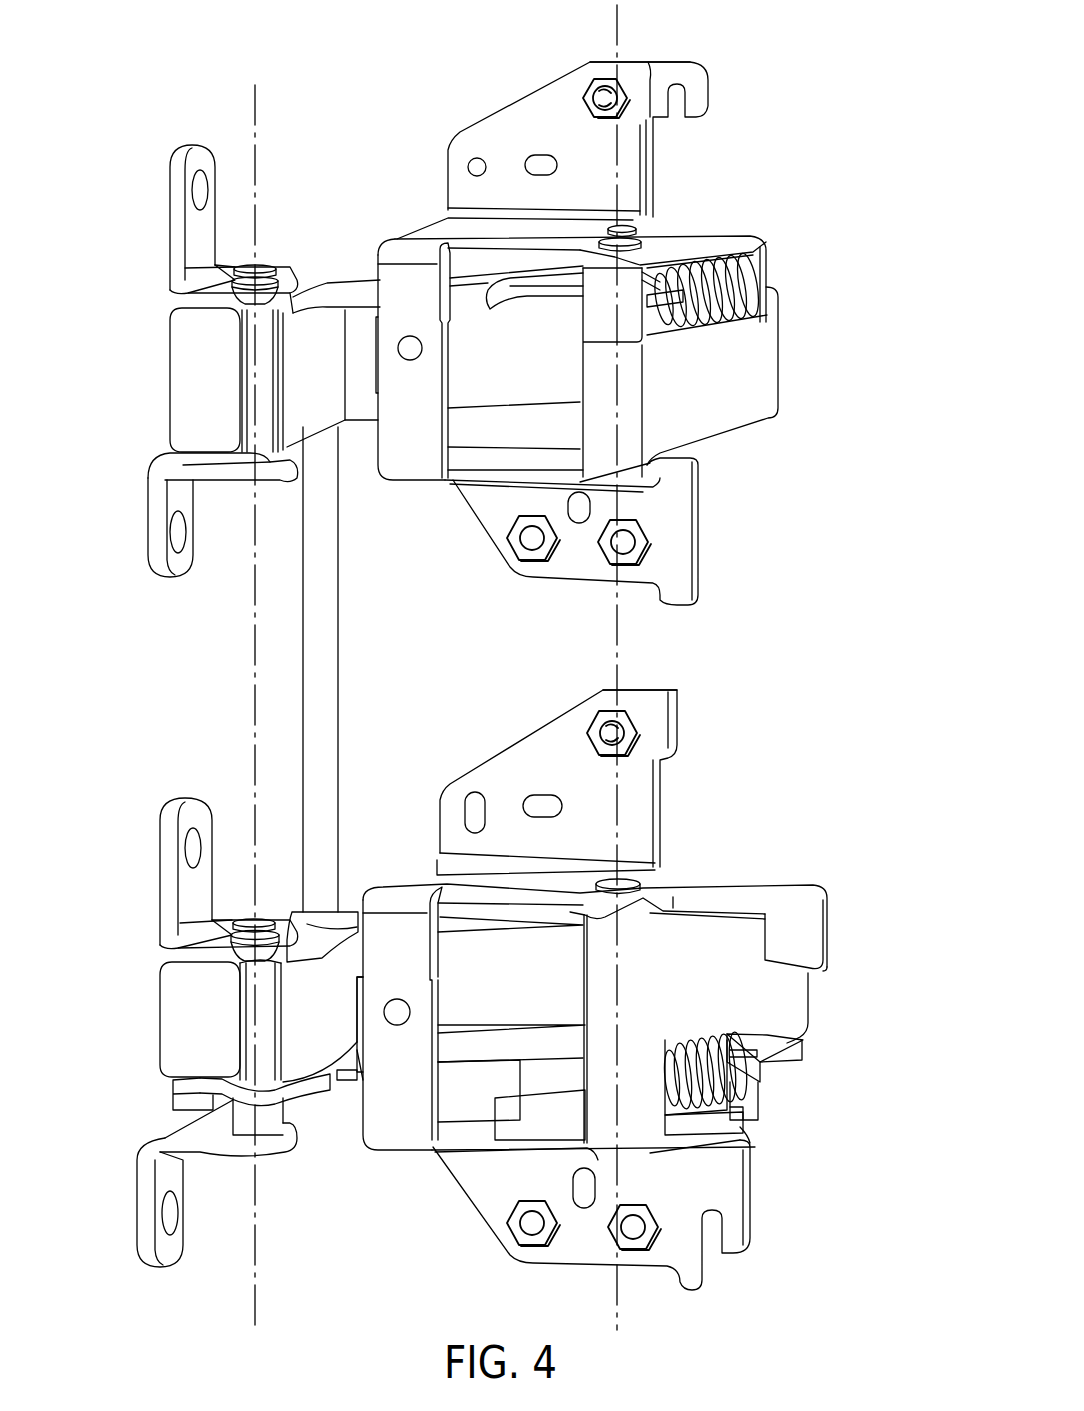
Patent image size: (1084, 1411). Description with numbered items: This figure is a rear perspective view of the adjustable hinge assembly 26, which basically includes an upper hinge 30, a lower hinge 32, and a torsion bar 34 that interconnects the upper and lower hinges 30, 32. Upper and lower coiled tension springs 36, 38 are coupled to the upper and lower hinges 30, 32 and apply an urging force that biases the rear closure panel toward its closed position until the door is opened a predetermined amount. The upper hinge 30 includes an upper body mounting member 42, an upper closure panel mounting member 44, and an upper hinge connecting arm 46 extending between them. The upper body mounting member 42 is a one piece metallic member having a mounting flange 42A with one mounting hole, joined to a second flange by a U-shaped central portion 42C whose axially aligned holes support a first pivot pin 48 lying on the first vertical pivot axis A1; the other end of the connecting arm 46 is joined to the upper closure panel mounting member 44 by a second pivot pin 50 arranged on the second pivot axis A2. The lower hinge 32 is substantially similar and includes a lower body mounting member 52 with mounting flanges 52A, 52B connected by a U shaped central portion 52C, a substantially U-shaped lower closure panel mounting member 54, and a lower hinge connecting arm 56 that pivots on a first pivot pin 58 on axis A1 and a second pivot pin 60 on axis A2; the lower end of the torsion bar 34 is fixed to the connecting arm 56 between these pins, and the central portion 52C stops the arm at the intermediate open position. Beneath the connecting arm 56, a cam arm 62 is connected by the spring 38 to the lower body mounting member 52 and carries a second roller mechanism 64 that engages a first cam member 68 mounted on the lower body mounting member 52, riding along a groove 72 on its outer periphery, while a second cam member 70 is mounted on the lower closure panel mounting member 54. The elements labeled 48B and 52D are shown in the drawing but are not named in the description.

The adjustable hinge assembly 26 is at (752, 174).
The upper hinge 30 is at (832, 350).
The lower hinge 32 is at (852, 1022).
The torsion bar 34 is at (342, 640).
The upper coiled tension spring 36 is at (716, 318).
The lower coiled tension spring 38 is at (705, 1062).
The upper body mounting member 42 is at (568, 129).
The mounting flange 42A is at (652, 62).
The U-shaped central portion 42C is at (448, 428).
The upper closure panel mounting member 44 is at (160, 208).
The upper hinge connecting arm 46 is at (473, 270).
The first pivot pin 48 is at (638, 232).
The upper lower bracket 48B is at (700, 548).
The second pivot pin 50 is at (266, 282).
The lower body mounting member 52 is at (597, 760).
The mounting flange 52A is at (645, 690).
The mounting flange 52B is at (752, 1222).
The U shaped central portion 52C is at (400, 1100).
The lower bracket end flap 52D is at (832, 918).
The lower closure panel mounting member 54 is at (152, 872).
The lower hinge connecting arm 56 is at (828, 991).
The first pivot pin 58 is at (628, 882).
The second pivot pin 60 is at (264, 936).
The cam arm 62 is at (462, 1065).
The second roller mechanism 64 is at (760, 1106).
The first cam member 68 is at (530, 1115).
The second cam member 70 is at (178, 1088).
The groove 72 is at (695, 1122).
The first vertical pivot axis A1 is at (617, 26).
The second pivot axis A2 is at (257, 110).